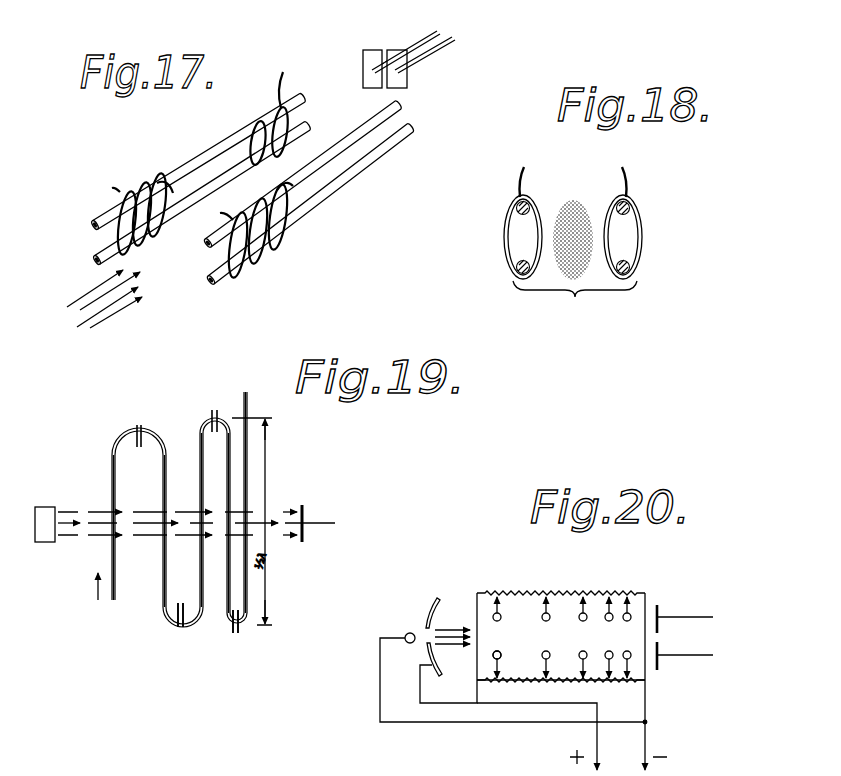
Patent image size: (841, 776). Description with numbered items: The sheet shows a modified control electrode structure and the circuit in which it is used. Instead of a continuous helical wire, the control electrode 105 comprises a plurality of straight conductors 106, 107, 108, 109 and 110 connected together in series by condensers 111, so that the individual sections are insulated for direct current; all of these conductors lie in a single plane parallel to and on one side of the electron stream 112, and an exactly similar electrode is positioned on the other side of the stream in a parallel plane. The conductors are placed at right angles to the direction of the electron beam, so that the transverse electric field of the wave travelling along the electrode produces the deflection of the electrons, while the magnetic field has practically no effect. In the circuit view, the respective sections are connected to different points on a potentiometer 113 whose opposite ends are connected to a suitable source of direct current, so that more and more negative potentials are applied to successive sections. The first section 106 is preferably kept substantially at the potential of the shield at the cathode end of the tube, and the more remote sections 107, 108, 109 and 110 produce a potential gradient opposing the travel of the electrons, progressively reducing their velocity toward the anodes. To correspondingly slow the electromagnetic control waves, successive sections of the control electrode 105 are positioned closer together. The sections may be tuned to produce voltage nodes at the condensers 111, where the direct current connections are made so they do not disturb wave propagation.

In FIG. 19, the control electrode 105 is at (115, 448).
In FIG. 20, the control electrode 105 is at (502, 617).
In FIG. 19, the first conductor section 106 is at (116, 480).
In FIG. 20, the first conductor section 106 is at (501, 656).
In FIG. 19, the conductor section 107 is at (167, 483).
In FIG. 20, the conductor section 107 is at (552, 641).
In FIG. 19, the conductor section 108 is at (202, 453).
In FIG. 20, the conductor section 108 is at (581, 653).
In FIG. 19, the conductor section 109 is at (227, 555).
In FIG. 20, the conductor section 109 is at (606, 652).
In FIG. 19, the conductor section 110 is at (247, 468).
In FIG. 20, the conductor section 110 is at (624, 654).
In FIG. 19, the condensers 111 is at (177, 620).
In FIG. 19, the electron stream 112 is at (83, 507).
In FIG. 20, the electron stream 112 is at (445, 627).
In FIG. 20, the potentiometer 113 is at (513, 684).